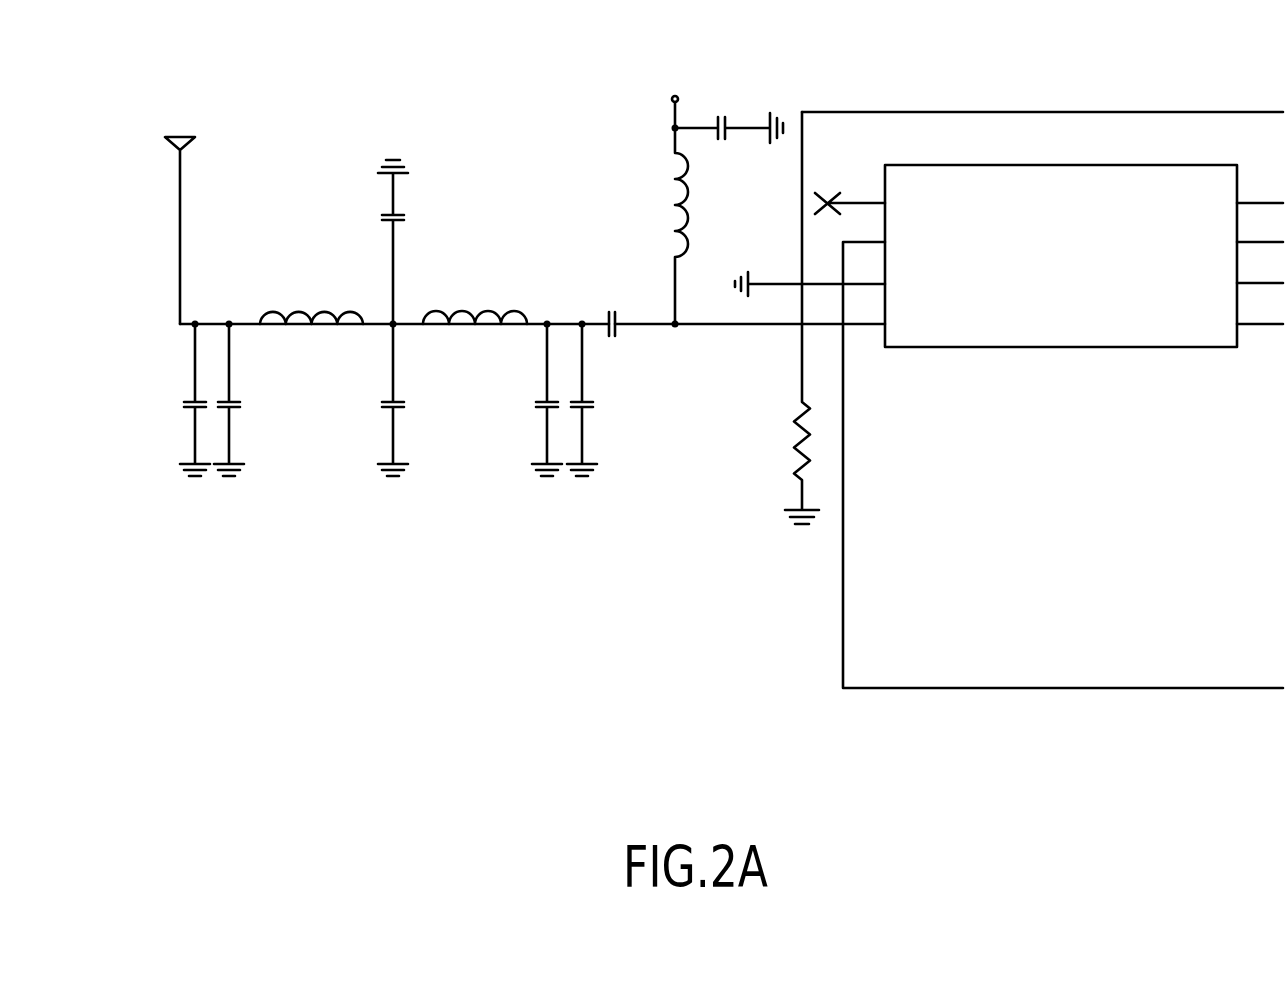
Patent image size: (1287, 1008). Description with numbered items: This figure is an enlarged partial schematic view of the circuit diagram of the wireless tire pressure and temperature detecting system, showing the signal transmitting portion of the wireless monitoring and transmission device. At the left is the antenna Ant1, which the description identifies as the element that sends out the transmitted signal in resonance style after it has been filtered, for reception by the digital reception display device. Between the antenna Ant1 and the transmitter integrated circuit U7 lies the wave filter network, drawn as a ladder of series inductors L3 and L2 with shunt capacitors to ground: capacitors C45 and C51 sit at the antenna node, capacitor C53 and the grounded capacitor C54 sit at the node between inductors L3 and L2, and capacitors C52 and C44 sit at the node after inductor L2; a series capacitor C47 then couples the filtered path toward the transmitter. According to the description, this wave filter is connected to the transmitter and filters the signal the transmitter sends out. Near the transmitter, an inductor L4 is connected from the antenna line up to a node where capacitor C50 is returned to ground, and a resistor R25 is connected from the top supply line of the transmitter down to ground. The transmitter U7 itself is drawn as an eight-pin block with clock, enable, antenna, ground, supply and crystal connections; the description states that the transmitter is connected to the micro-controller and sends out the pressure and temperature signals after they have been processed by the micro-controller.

The antenna Ant1 is at (190, 190).
The capacitor 5.6p C45 is at (163, 400).
The capacitor 6.8p C51 is at (259, 400).
The capacitor 1.8p C53 is at (367, 400).
The capacitor 0.82p C52 is at (506, 400).
The capacitor 1p C44 is at (613, 400).
The capacitor 2.7p C54 is at (364, 242).
The capacitor 2.2p C47 is at (620, 323).
The capacitor 1n C50 is at (729, 130).
The inductor 18n L3 is at (311, 315).
The inductor 8.2n L2 is at (475, 315).
The inductor 33nH L4 is at (640, 190).
The resistor 100K R25 is at (769, 318).
The transmitter IC T5754 U7 is at (1009, 400).